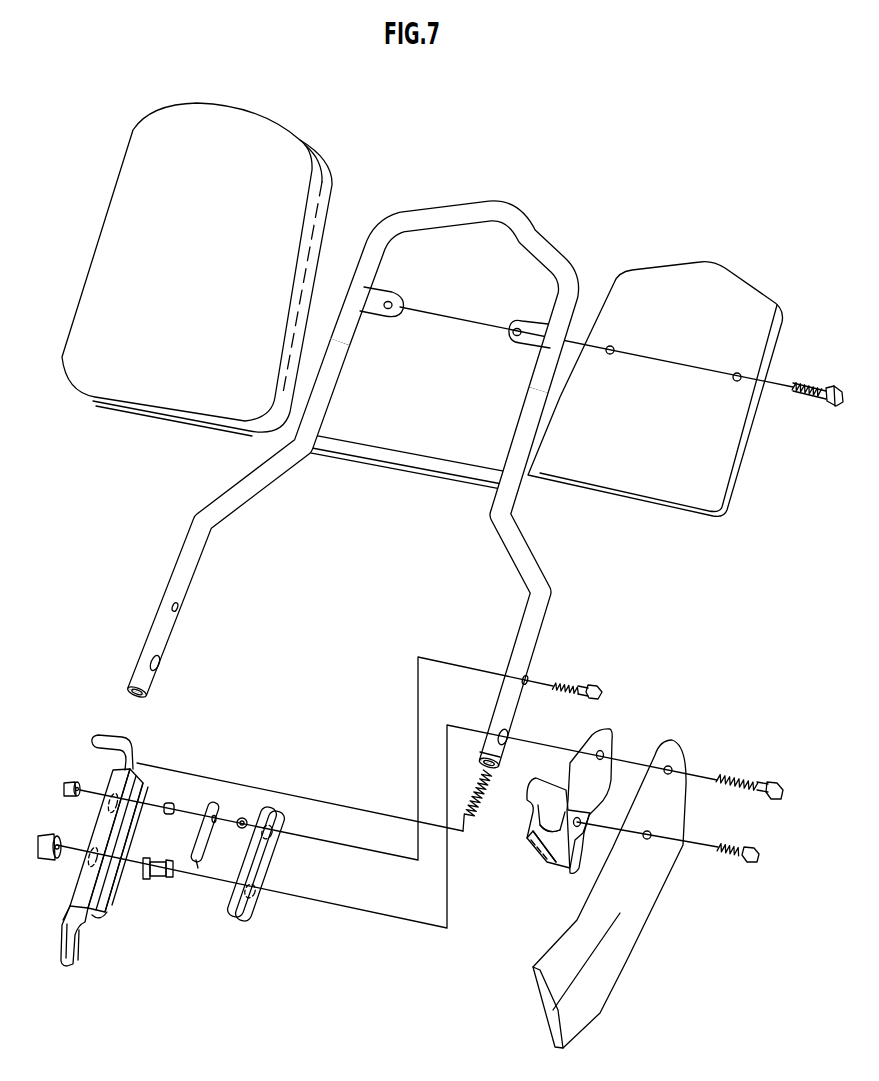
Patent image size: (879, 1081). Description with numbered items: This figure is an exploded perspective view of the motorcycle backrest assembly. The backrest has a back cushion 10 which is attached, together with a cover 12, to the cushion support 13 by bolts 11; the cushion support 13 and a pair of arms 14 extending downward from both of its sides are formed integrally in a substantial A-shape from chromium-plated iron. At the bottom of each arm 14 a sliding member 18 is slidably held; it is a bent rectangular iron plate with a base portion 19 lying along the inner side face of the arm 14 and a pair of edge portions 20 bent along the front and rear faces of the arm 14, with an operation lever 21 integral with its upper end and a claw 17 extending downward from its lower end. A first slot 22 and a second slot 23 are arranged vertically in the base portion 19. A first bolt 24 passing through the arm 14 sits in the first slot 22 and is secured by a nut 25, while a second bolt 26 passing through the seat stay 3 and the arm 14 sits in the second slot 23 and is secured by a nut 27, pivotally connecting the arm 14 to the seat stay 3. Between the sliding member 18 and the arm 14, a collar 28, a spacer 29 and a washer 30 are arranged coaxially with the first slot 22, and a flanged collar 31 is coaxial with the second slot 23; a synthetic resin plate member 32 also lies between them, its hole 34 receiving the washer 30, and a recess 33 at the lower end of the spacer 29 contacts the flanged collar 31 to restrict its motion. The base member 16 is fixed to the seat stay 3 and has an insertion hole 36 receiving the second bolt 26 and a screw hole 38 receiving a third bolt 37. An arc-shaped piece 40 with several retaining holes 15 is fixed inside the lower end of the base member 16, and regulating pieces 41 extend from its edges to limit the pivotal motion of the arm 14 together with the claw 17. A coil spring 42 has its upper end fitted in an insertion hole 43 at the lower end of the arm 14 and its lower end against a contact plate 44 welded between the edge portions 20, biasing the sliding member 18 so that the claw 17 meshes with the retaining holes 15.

The seat stay 3 is at (590, 998).
The back cushion 10 is at (296, 140).
The bolts 11 is at (832, 386).
The cover 12 is at (708, 264).
The cushion support 13 is at (432, 212).
The arms 14 is at (182, 551).
The retaining holes 15 is at (543, 864).
The base member 16 is at (603, 726).
The claw 17 is at (75, 950).
The sliding member 18 is at (100, 833).
The base portion 19 is at (63, 897).
The edge portions 20 is at (113, 888).
The operation lever 21 is at (110, 735).
The first slot 22 is at (152, 798).
The second slot 23 is at (82, 862).
The first bolt 24 is at (607, 686).
The nut 25 is at (70, 782).
The second bolt 26 is at (769, 784).
The nut 27 is at (46, 834).
The collar 28 is at (175, 803).
The spacer 29 is at (210, 845).
The washer 30 is at (246, 817).
The flanged collar 31 is at (158, 881).
The plate member 32 is at (240, 918).
The recess 33 is at (197, 866).
The hole 34 is at (272, 836).
The insertion hole 36 is at (605, 754).
The third bolt 37 is at (746, 862).
The screw hole 38 is at (578, 832).
The arc-shaped piece 40 is at (528, 840).
The regulating pieces 41 is at (536, 780).
The coil spring 42 is at (482, 786).
The insertion hole 43 is at (480, 768).
The contact plate 44 is at (98, 912).